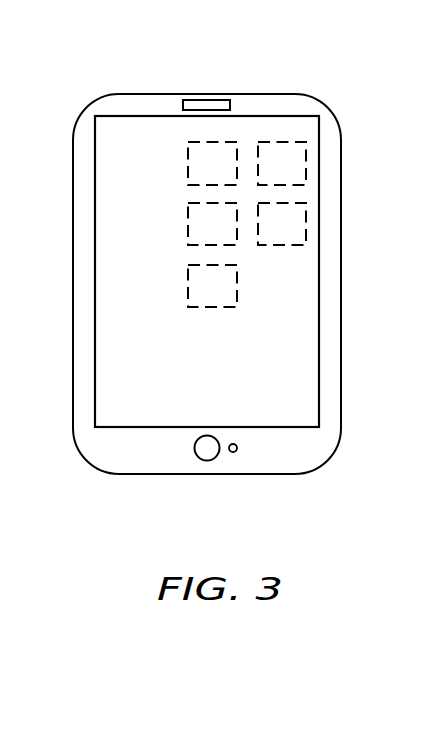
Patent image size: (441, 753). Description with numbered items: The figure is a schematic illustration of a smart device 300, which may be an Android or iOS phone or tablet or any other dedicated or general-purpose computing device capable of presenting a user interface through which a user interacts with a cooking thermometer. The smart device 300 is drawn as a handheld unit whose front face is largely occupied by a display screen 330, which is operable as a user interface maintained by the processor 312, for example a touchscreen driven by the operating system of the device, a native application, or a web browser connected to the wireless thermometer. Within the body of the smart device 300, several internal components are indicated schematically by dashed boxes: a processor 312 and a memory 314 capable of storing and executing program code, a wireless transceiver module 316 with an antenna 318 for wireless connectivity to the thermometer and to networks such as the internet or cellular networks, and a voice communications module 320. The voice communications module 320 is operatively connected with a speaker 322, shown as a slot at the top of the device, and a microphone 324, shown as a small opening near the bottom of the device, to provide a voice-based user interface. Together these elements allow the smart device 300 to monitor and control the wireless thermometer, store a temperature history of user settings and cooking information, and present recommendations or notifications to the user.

The smart device 300 is at (340, 425).
The display screen 330 is at (319, 363).
The speaker 322 is at (205, 100).
The processor 312 is at (188, 145).
The memory 314 is at (306, 162).
The wireless transceiver module 316 is at (306, 225).
The antenna 318 is at (188, 219).
The voice communications module 320 is at (213, 307).
The microphone 324 is at (233, 452).